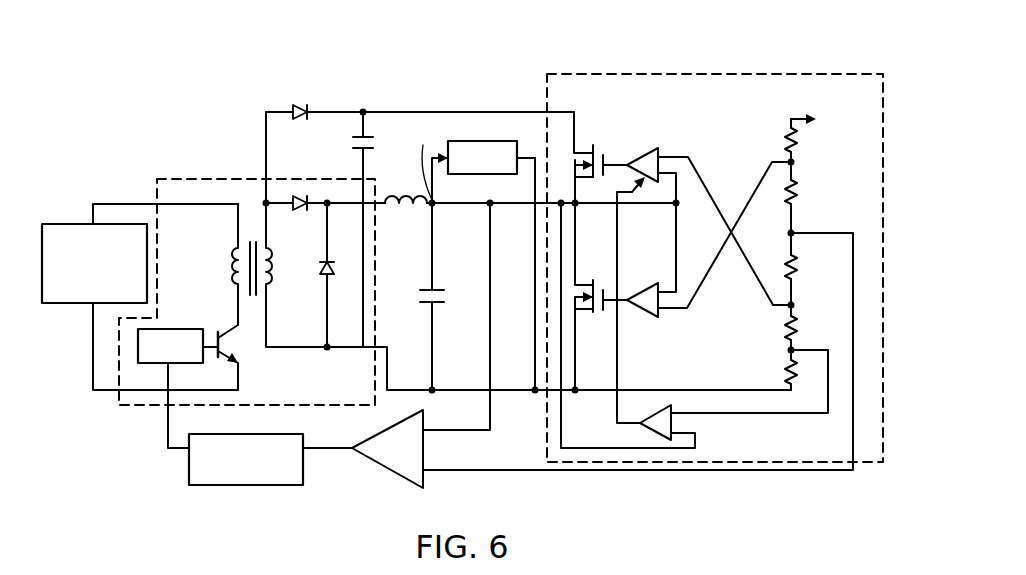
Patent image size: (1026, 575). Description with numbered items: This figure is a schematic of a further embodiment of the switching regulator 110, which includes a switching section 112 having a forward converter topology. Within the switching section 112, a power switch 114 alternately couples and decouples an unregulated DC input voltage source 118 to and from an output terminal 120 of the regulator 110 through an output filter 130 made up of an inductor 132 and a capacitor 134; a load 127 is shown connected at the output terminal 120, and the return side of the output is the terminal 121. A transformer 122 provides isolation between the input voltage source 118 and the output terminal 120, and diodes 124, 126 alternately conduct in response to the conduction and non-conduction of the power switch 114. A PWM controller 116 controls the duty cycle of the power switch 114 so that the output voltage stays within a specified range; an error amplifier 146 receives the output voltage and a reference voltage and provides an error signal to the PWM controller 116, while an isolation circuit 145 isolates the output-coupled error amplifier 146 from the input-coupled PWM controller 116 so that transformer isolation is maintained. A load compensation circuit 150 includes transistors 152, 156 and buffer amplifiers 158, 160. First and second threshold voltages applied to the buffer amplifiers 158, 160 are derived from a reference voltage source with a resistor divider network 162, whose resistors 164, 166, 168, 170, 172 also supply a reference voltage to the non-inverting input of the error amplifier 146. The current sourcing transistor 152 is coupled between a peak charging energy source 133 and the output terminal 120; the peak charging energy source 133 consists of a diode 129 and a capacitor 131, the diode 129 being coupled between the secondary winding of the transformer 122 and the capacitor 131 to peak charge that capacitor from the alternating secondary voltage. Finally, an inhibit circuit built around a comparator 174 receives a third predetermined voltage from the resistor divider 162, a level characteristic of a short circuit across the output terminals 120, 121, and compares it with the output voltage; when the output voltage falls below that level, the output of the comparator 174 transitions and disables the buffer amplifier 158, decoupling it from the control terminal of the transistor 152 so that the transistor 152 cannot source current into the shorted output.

The switching regulator 110 is at (464, 86).
The switching section 112 is at (270, 178).
The power switch 114 is at (235, 341).
The PWM controller 116 is at (170, 329).
The unregulated DC input voltage source 118 is at (79, 222).
The output terminal 120 is at (440, 202).
The output terminal 121 is at (434, 388).
The transformer 122 is at (253, 232).
The diode 124 is at (298, 214).
The diode 126 is at (311, 275).
The load 127 is at (466, 140).
The diode 129 is at (298, 123).
The output filter 130 is at (378, 209).
The capacitor 131 is at (381, 229).
The inductor 132 is at (418, 198).
The peak charging energy source 133 is at (288, 93).
The capacitor 134 is at (445, 298).
The isolation circuit 145 is at (235, 434).
The error amplifier 146 is at (392, 473).
The load compensation circuit 150 is at (735, 72).
The current sourcing transistor 152 is at (590, 144).
The transistor 156 is at (585, 276).
The buffer amplifier 158 is at (643, 152).
The buffer amplifier 160 is at (635, 290).
The resistor divider network 162 is at (796, 250).
The resistor 164 is at (810, 145).
The resistor 166 is at (810, 196).
The resistor 168 is at (810, 268).
The resistor 170 is at (810, 329).
The resistor 172 is at (788, 376).
The comparator 174 is at (645, 413).